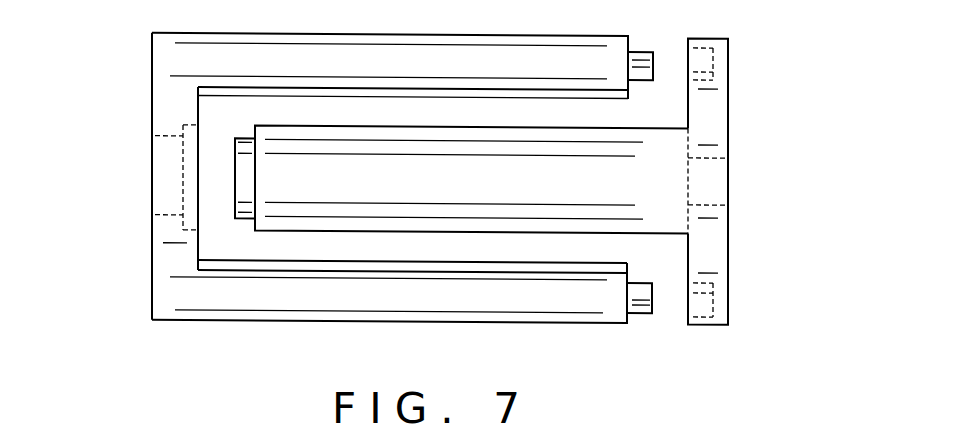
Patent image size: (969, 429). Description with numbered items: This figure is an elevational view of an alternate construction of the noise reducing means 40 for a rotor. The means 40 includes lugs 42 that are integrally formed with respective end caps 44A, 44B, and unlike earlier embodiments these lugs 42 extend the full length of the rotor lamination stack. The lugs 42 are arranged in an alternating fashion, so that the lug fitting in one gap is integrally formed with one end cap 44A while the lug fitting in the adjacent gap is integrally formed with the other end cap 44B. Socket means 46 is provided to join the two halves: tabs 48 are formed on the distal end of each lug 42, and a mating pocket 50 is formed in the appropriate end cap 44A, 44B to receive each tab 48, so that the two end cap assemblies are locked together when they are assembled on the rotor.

The noise reducing means 40 is at (758, 116).
The lugs 42 is at (350, 70).
The end cap 44A is at (140, 82).
The end cap 44B is at (740, 237).
The socket means 46 is at (208, 235).
The tabs 48 is at (243, 138).
The mating pocket 50 is at (183, 178).